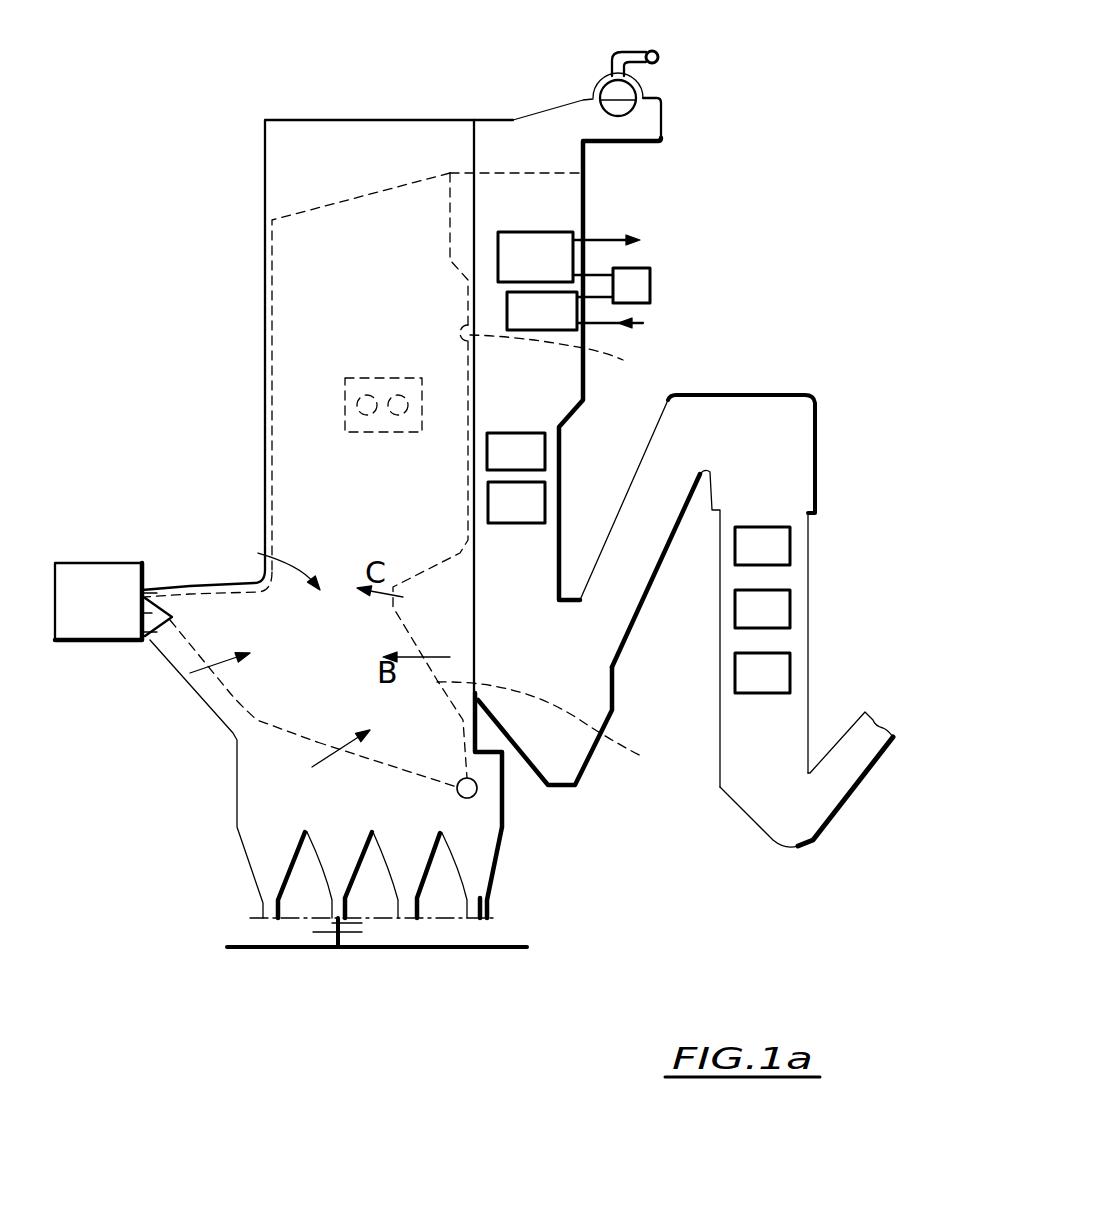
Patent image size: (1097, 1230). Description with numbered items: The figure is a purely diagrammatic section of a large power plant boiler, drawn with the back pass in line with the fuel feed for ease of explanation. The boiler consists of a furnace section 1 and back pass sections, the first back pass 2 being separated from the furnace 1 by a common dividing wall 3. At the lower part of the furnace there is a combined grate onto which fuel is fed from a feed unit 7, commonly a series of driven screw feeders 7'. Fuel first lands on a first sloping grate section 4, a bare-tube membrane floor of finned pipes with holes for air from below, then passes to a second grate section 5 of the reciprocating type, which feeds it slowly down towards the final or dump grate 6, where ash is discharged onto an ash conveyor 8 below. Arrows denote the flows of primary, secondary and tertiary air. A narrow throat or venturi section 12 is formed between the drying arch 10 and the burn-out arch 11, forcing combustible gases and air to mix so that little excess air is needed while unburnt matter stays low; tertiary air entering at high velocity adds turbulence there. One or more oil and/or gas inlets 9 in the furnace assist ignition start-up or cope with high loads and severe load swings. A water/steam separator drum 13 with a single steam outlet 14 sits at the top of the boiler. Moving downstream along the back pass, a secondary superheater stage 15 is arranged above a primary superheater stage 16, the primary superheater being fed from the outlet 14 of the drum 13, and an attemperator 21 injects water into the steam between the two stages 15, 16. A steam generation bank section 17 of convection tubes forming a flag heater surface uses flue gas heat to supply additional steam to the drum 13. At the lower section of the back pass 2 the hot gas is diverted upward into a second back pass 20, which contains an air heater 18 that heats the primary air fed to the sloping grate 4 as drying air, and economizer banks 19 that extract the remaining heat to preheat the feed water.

The furnace section 1 is at (287, 250).
The first back pass section 2 is at (565, 388).
The common dividing wall 3 is at (551, 351).
The first sloping grate section 4 is at (230, 692).
The second grate section 5 is at (313, 743).
The dump grate 6 is at (477, 793).
The feed unit 7 is at (98, 562).
The driven screw feeders 7' is at (137, 560).
The ash conveyor 8 is at (507, 945).
The oil and/or gas inlet 9 is at (345, 390).
The drying arch 10 is at (190, 587).
The burn-out arch 11 is at (561, 727).
The throat section 12 is at (333, 610).
The water/steam separator drum 13 is at (625, 97).
The steam outlet 14 is at (620, 50).
The secondary superheater stage 15 is at (612, 322).
The primary superheater stage 16 is at (607, 238).
The steam generation bank section 17 is at (537, 502).
The air heater 18 is at (778, 547).
The economizer banks 19 is at (778, 673).
The second back pass 20 is at (793, 462).
The attemperator 21 is at (637, 283).